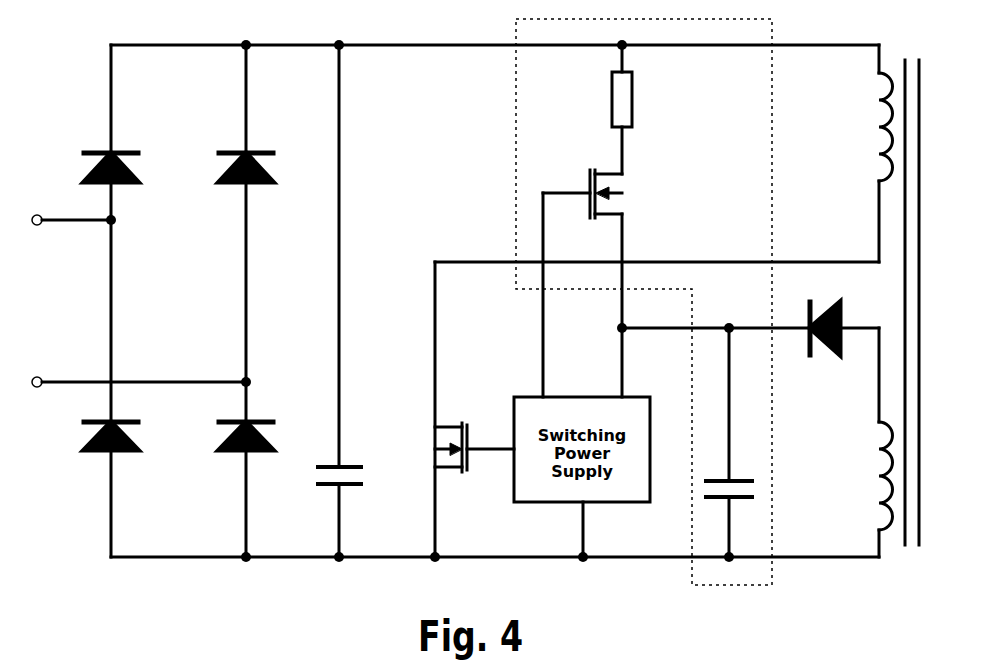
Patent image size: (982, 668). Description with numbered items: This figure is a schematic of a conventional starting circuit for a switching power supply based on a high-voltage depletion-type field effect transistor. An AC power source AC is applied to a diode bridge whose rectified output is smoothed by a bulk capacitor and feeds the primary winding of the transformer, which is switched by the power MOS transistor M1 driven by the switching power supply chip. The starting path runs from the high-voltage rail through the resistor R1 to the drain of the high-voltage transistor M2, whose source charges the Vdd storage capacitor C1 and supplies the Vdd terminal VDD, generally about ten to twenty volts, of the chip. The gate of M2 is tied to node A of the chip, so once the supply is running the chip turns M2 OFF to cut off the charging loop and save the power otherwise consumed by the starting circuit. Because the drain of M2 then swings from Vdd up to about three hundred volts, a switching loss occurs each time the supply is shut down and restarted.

The resistor R1 is at (640, 109).
The high-voltage transistor M2 is at (602, 194).
The MOS transistor M1 is at (449, 447).
The capacitor C1 is at (735, 442).
The Vdd supply terminal VDD is at (648, 305).
The node A is at (530, 295).
The AC power source AC is at (28, 305).